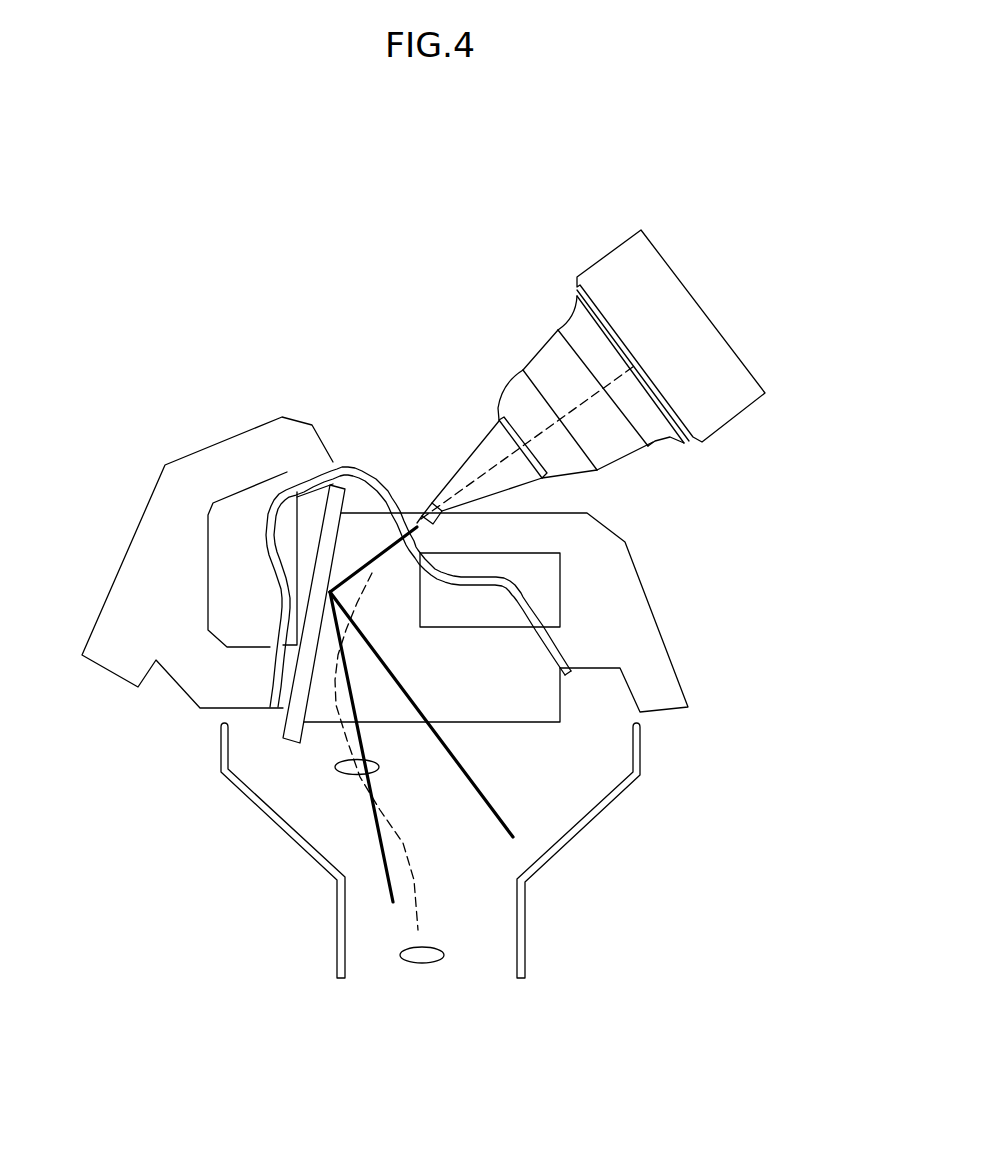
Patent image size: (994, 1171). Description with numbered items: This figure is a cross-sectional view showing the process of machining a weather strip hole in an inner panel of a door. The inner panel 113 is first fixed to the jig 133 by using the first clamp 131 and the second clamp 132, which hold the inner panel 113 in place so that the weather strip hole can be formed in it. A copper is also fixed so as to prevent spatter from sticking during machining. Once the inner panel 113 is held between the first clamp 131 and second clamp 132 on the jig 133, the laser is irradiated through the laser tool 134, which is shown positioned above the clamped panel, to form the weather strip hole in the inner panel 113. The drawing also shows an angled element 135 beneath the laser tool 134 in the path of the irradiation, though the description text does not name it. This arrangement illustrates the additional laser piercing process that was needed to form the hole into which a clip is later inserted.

The inner panel 113 is at (513, 588).
The first clamp 131 is at (145, 555).
The second clamp 132 is at (637, 638).
The jig 133 is at (533, 703).
The laser tool 134 is at (598, 278).
The reflector 135 is at (293, 738).